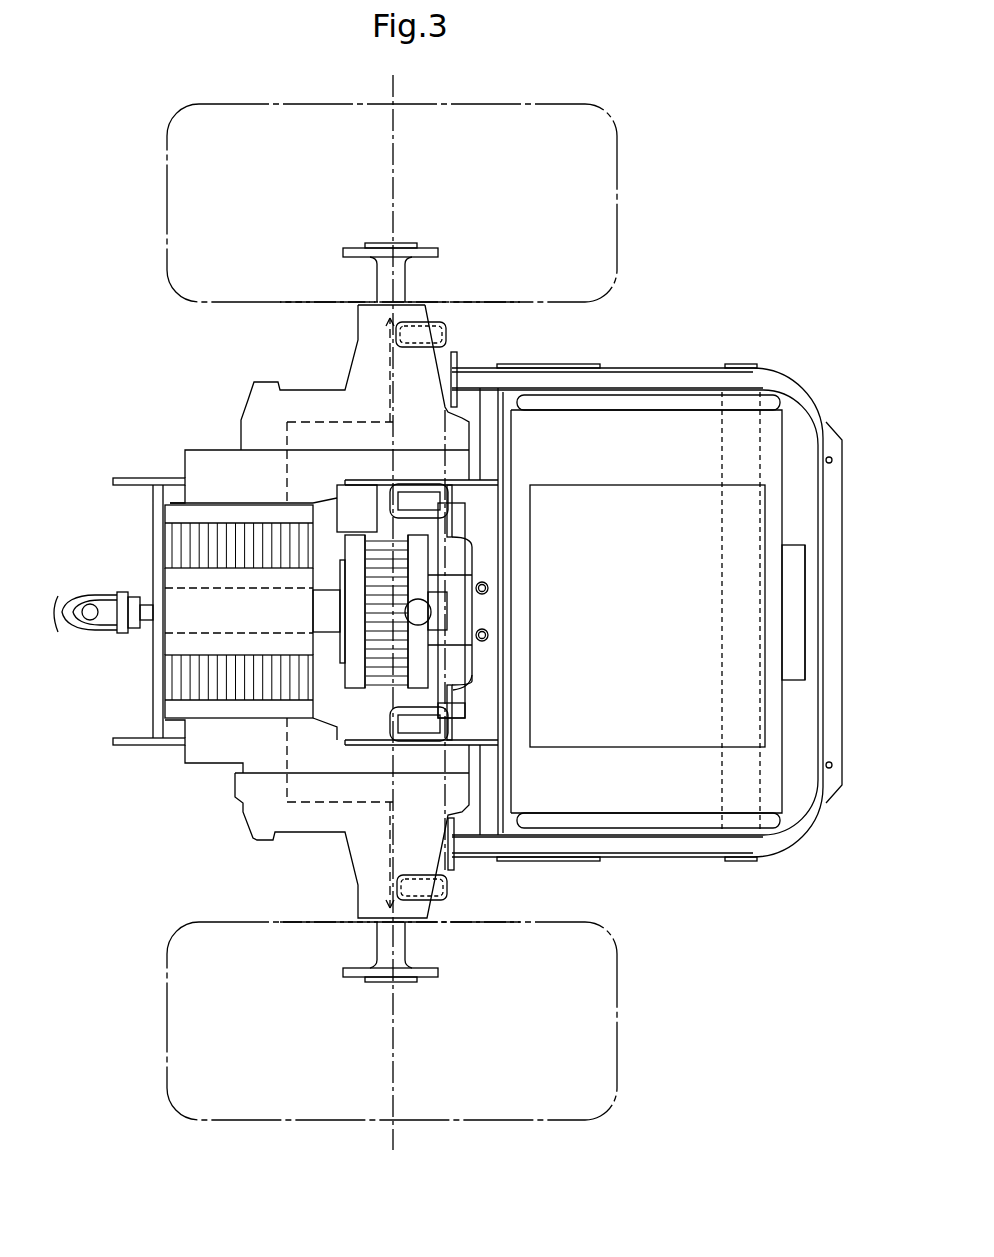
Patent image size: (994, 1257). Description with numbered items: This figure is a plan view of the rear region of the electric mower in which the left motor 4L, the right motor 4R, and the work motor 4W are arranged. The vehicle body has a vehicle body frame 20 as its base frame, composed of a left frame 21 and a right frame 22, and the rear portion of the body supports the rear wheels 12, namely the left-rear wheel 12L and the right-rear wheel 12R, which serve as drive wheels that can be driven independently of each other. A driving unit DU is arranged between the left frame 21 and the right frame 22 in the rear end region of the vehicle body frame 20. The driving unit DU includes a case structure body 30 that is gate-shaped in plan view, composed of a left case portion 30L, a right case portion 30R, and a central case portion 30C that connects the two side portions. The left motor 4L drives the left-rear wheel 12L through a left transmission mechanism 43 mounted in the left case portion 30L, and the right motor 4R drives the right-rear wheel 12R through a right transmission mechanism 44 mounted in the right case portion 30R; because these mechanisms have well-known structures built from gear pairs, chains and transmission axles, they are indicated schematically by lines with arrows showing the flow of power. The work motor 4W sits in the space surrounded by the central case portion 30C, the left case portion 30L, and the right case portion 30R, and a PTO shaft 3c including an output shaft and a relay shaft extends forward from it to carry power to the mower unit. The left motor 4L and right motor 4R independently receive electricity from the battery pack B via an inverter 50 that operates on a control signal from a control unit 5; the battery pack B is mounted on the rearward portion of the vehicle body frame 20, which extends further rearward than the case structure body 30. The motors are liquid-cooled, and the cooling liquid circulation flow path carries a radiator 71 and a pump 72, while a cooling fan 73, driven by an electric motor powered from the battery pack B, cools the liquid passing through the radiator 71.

The right-rear wheel 12R is at (166, 190).
The left-rear wheel 12L is at (166, 1000).
The rear wheels 12 is at (341, 612).
The right case portion 30R is at (253, 405).
The left case portion 30L is at (252, 817).
The central case portion 30C is at (172, 610).
The case structure body 30 is at (326, 611).
The driving unit DU is at (326, 611).
The right transmission mechanism 44 is at (313, 417).
The left transmission mechanism 43 is at (318, 822).
The right frame 22 is at (147, 477).
The left frame 21 is at (131, 750).
The vehicle body frame 20 is at (125, 614).
The pump 72 is at (352, 503).
The radiator 71 is at (395, 690).
The cooling fan 73 is at (465, 700).
The right motor 4R is at (163, 545).
The left motor 4L is at (168, 683).
The work motor 4W is at (443, 567).
The PTO shaft 3c is at (62, 636).
The control unit 5 is at (604, 492).
The inverter 50 is at (647, 589).
The battery pack B is at (694, 423).